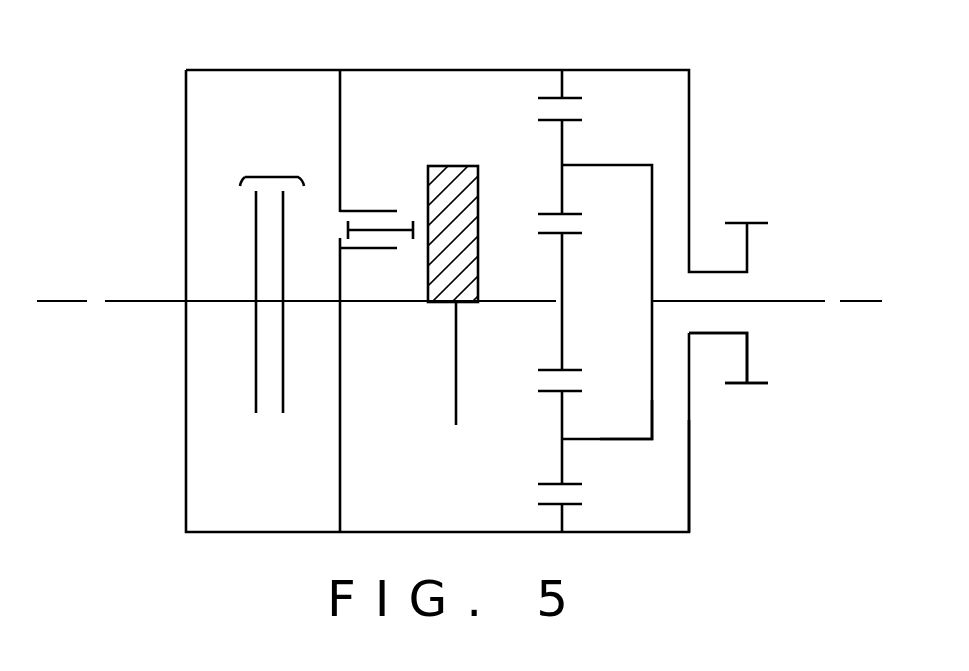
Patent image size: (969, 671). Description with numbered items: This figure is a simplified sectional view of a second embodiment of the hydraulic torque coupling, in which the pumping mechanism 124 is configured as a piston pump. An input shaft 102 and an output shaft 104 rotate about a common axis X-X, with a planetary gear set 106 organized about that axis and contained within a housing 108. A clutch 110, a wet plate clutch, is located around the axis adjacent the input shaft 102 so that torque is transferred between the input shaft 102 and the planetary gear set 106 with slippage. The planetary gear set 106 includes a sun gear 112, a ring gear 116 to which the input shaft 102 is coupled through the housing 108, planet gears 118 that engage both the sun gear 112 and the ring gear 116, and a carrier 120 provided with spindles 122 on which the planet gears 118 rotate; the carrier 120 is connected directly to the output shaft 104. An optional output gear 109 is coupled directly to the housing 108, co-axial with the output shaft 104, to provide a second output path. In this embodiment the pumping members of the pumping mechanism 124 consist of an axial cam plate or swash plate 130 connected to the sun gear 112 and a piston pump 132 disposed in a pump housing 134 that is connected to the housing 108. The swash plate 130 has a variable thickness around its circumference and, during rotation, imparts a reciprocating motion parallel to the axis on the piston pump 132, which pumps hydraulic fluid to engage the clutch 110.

The input shaft 102 is at (148, 303).
The output shaft 104 is at (775, 300).
The planetary gear set 106 is at (648, 500).
The housing 108 is at (256, 532).
The output gear 109 is at (747, 360).
The clutch 110 is at (272, 177).
The sun gear 112 is at (562, 255).
The ring gear 116 is at (562, 88).
The planet gears 118 is at (562, 143).
The carrier 120 is at (652, 195).
The spindles 122 is at (630, 440).
The pumping mechanism 124 is at (434, 106).
The swash plate 130 is at (456, 166).
The piston pump 132 is at (380, 229).
The pump housing 134 is at (362, 249).